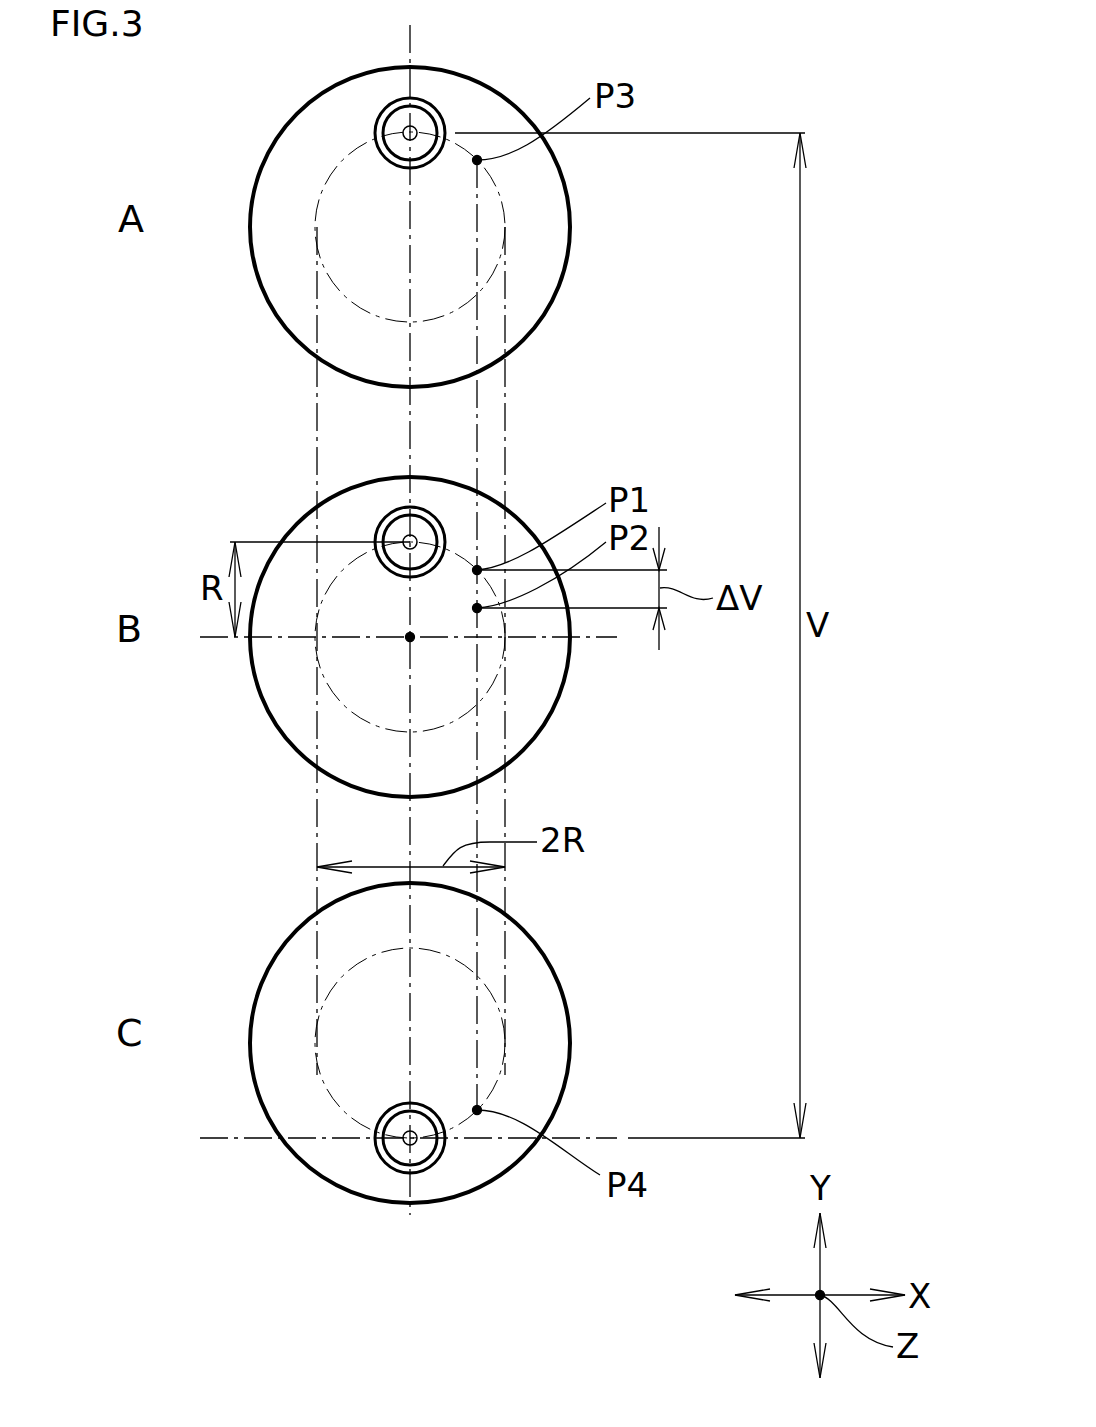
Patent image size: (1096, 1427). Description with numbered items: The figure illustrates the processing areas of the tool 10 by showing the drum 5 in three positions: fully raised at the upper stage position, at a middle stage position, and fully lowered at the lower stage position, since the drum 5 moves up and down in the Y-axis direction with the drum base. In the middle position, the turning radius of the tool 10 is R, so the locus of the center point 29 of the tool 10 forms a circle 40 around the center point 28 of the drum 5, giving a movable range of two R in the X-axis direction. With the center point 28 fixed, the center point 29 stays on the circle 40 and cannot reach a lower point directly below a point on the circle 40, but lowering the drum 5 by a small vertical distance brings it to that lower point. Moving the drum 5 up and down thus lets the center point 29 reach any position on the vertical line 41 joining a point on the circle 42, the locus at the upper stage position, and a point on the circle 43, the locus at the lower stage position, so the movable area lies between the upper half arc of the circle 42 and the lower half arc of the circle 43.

The drum 5 is at (572, 213).
The tool 10 is at (378, 125).
The center point of the drum 28 is at (410, 637).
The center point of the tool 29 is at (408, 542).
The circle 40 is at (467, 545).
The vertical line 41 is at (477, 452).
The circle 42 is at (463, 148).
The circle 43 is at (572, 1092).